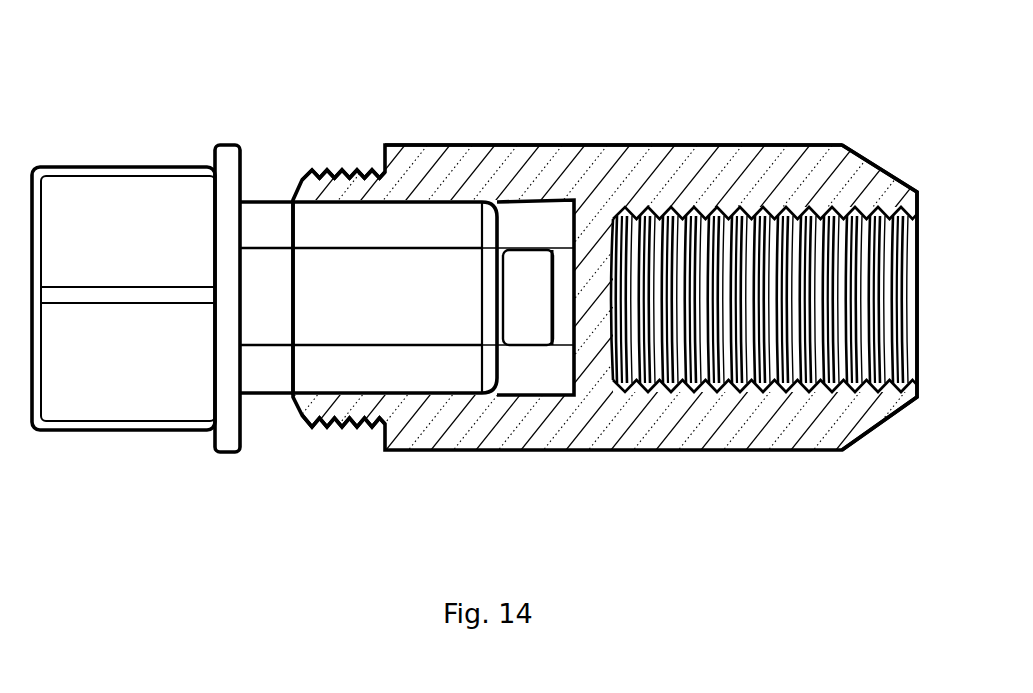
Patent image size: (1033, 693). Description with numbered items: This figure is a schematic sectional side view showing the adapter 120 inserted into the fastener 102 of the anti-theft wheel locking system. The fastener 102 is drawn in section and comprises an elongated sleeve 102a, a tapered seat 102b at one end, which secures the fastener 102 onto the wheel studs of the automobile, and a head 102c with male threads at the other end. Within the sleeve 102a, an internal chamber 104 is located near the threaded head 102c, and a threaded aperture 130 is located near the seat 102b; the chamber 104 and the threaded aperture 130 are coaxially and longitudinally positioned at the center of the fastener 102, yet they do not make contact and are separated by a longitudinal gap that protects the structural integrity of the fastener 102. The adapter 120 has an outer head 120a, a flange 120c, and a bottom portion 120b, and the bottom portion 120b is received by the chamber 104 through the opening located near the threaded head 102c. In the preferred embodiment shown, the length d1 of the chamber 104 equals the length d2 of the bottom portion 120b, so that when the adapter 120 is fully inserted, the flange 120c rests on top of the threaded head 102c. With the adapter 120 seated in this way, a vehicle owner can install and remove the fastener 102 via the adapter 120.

The fastener 102 is at (908, 447).
The elongated sleeve 102a is at (614, 155).
The seat 102b is at (909, 176).
The head 102c is at (322, 157).
The chamber 104 is at (521, 215).
The threaded aperture 130 is at (762, 220).
The adapter 120 is at (302, 273).
The adapter head 120a is at (123, 298).
The bottom portion 120b is at (395, 297).
The flange 120c is at (232, 132).
The length of the chamber d1 is at (565, 227).
The length of the bottom portion d2 is at (487, 322).